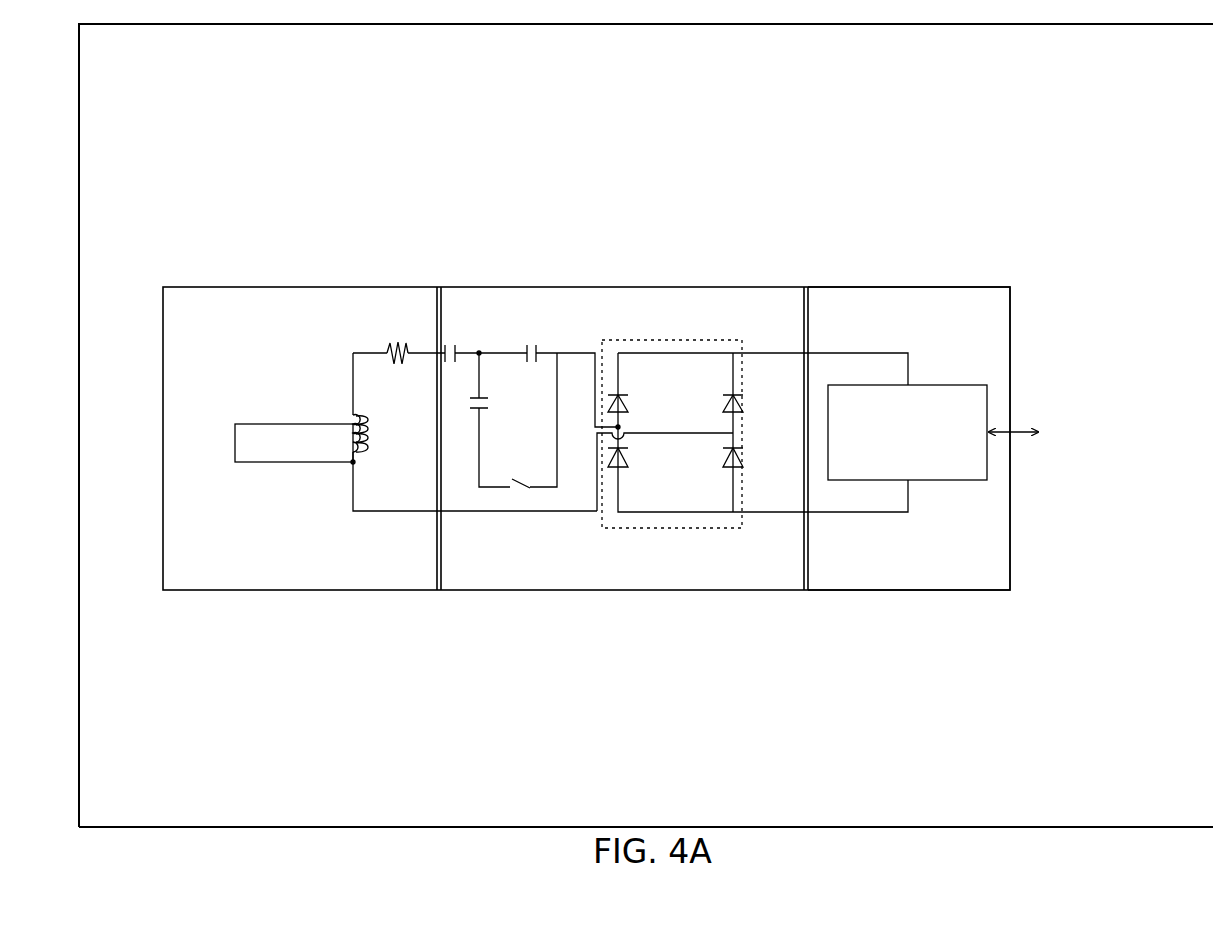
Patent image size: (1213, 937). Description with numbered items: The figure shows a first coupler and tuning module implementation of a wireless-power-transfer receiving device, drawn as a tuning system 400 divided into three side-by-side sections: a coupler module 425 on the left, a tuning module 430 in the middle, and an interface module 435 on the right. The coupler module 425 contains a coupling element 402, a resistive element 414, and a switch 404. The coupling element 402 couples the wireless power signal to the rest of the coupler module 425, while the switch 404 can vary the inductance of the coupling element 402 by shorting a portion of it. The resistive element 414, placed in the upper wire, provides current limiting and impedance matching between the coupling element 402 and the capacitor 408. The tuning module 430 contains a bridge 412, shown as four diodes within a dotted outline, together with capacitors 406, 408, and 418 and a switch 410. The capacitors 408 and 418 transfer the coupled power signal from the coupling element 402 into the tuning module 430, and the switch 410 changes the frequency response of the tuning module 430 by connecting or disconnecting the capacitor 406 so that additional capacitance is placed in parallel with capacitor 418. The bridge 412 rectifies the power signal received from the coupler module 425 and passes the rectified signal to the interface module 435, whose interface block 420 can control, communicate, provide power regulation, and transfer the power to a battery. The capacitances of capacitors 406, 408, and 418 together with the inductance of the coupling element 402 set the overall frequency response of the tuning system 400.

The tuning system 400 is at (1078, 92).
The coupling element 402 is at (345, 414).
The switch 404 is at (226, 462).
The capacitor 406 is at (490, 404).
The capacitor 408 is at (458, 341).
The switch 410 is at (516, 498).
The bridge 412 is at (668, 531).
The resistive element 414 is at (396, 342).
The capacitor 418 is at (531, 341).
The interface block 420 is at (970, 479).
The coupler module 425 is at (297, 594).
The tuning module 430 is at (623, 593).
The interface module 435 is at (907, 594).